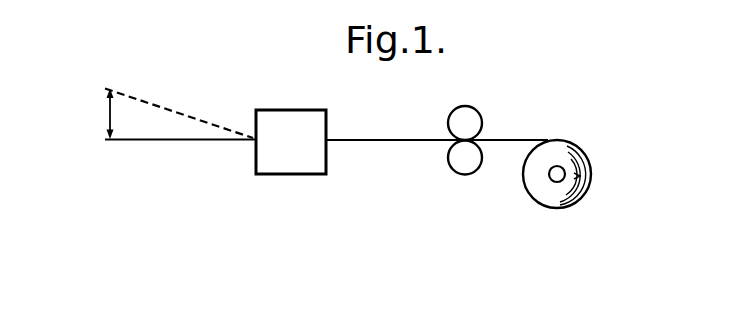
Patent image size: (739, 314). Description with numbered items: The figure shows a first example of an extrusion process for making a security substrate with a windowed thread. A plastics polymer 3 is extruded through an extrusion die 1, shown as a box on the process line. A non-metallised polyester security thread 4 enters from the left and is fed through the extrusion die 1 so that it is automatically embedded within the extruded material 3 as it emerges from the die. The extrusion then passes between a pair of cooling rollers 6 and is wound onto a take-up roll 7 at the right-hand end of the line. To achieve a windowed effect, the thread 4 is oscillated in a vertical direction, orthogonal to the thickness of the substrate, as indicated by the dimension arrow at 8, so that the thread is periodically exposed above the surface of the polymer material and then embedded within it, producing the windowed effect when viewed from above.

The extrusion die 1 is at (290, 120).
The plastics polymer 3 is at (367, 142).
The polyester security thread 4 is at (195, 143).
The cooling rollers 6 is at (467, 120).
The take-up roll 7 is at (591, 169).
The vertical oscillation of the thread 8 is at (110, 116).